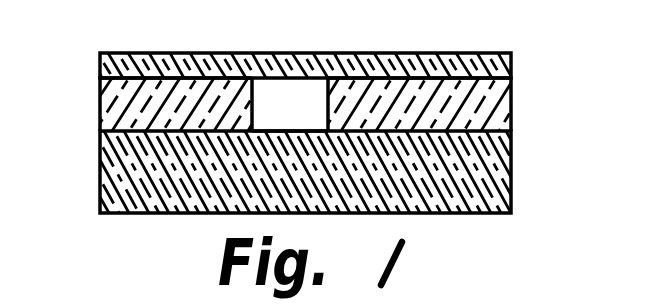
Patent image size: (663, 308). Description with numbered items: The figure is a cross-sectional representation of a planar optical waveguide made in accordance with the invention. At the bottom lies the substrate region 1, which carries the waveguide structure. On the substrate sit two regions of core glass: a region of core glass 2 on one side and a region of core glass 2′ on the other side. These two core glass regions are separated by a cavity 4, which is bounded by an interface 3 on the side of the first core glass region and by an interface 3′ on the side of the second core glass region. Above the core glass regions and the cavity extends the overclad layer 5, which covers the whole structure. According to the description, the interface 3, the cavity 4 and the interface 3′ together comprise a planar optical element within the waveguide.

The substrate region 1 is at (503, 172).
The region of core glass 2 is at (107, 111).
The region of core glass 2′ is at (503, 108).
The interface 3 is at (258, 108).
The interface 3′ is at (326, 107).
The cavity 4 is at (288, 100).
The overclad layer 5 is at (508, 68).